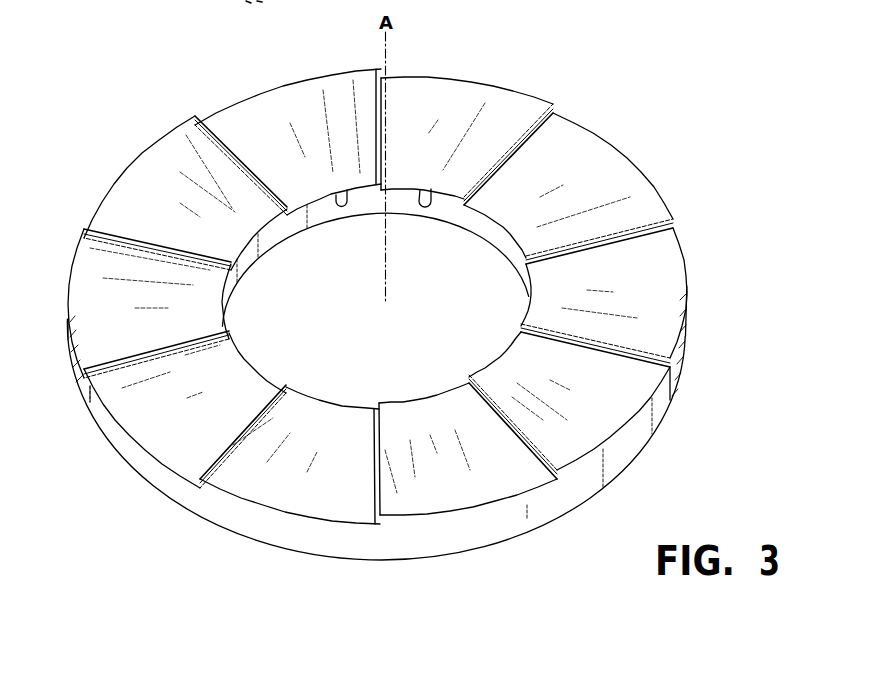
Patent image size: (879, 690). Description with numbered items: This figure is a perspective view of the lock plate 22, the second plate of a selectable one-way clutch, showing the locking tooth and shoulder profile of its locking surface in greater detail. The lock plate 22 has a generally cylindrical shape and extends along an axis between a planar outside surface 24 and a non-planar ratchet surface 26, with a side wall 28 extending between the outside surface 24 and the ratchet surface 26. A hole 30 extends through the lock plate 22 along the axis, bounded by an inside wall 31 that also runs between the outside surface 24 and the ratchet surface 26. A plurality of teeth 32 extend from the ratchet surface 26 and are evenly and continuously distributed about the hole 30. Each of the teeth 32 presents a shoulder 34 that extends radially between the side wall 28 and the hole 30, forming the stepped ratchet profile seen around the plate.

The lock plate 22 is at (656, 199).
The outside surface 24 is at (315, 557).
The ratchet surface 26 is at (482, 486).
The side wall 28 is at (120, 439).
The hole 30 is at (420, 190).
The inside wall 31 is at (347, 190).
The teeth 32 is at (507, 116).
The shoulder 34 is at (527, 143).